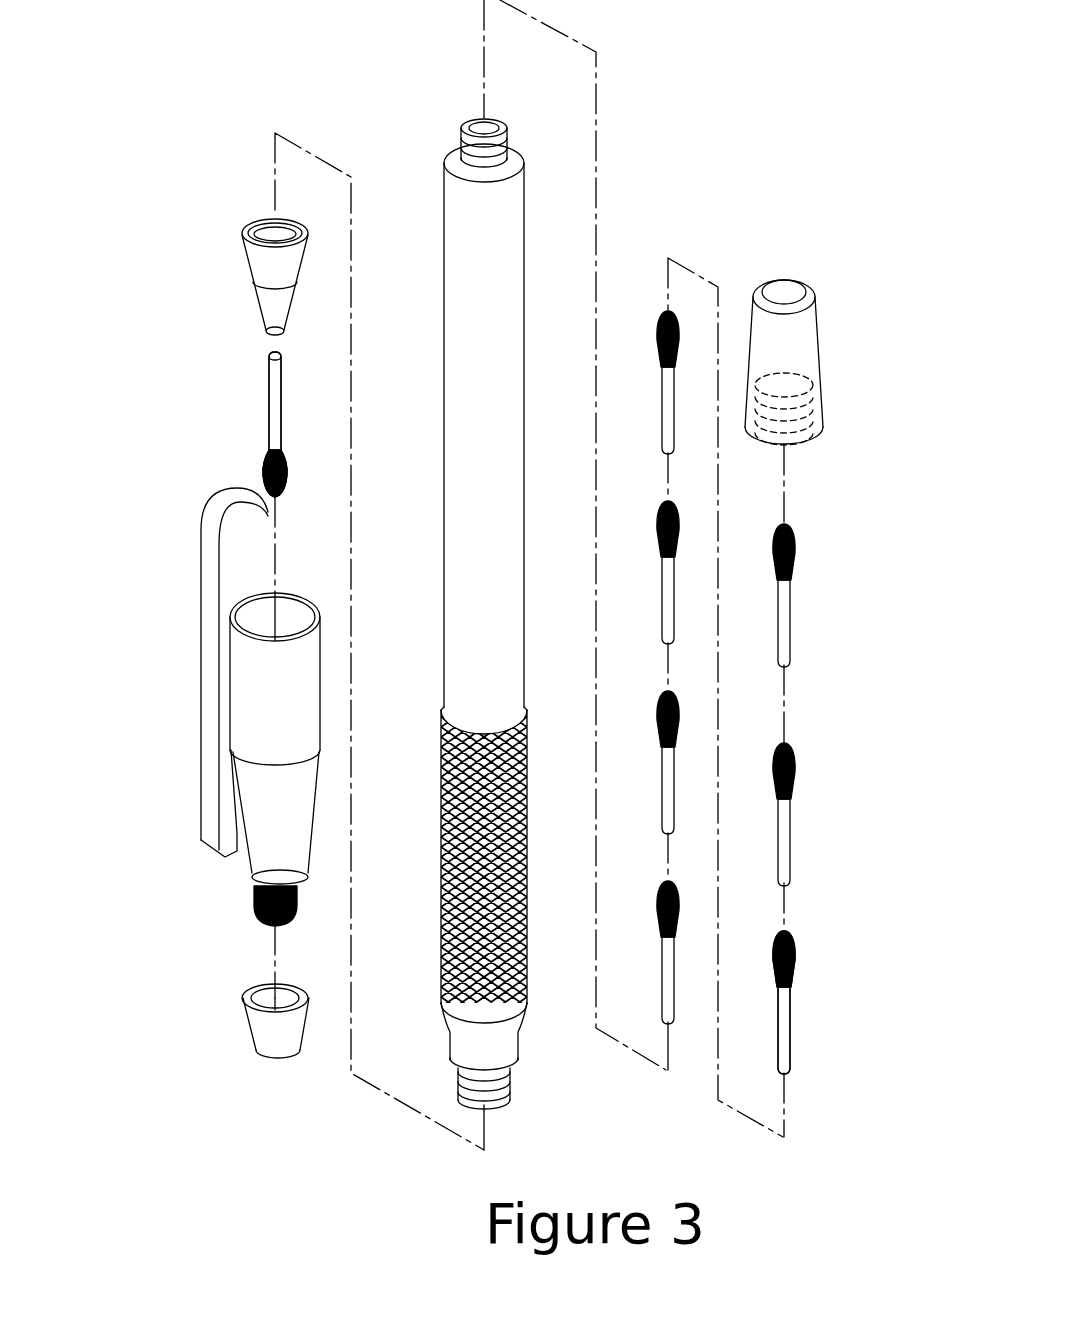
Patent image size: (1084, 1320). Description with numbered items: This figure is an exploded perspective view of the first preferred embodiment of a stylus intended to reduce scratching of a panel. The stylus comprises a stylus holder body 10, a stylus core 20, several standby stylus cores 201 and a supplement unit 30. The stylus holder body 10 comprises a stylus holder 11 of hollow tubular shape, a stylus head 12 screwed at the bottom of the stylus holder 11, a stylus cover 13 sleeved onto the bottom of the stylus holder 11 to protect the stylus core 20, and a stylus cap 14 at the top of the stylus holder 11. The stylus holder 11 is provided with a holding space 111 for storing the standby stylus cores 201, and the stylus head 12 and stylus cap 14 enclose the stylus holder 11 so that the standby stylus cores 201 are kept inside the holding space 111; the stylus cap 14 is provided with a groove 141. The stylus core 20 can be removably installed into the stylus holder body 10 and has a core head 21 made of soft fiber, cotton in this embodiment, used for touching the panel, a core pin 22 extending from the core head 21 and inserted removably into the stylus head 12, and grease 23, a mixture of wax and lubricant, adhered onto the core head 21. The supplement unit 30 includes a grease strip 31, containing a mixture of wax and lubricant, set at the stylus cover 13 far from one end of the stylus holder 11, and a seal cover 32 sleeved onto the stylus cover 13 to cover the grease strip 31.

The stylus holder body 10 is at (475, 556).
The stylus holder 11 is at (500, 280).
The holding space 111 is at (482, 130).
The stylus head 12 is at (267, 300).
The stylus cover 13 is at (252, 866).
The stylus cap 14 is at (836, 362).
The groove 141 is at (783, 367).
The stylus core 20 is at (258, 399).
The standby stylus cores 201 is at (806, 612).
The core head 21 is at (496, 718).
The core pin 22 is at (274, 430).
The grease 23 is at (268, 475).
The supplement unit 30 is at (212, 1040).
The grease strip 31 is at (253, 907).
The seal cover 32 is at (277, 1042).